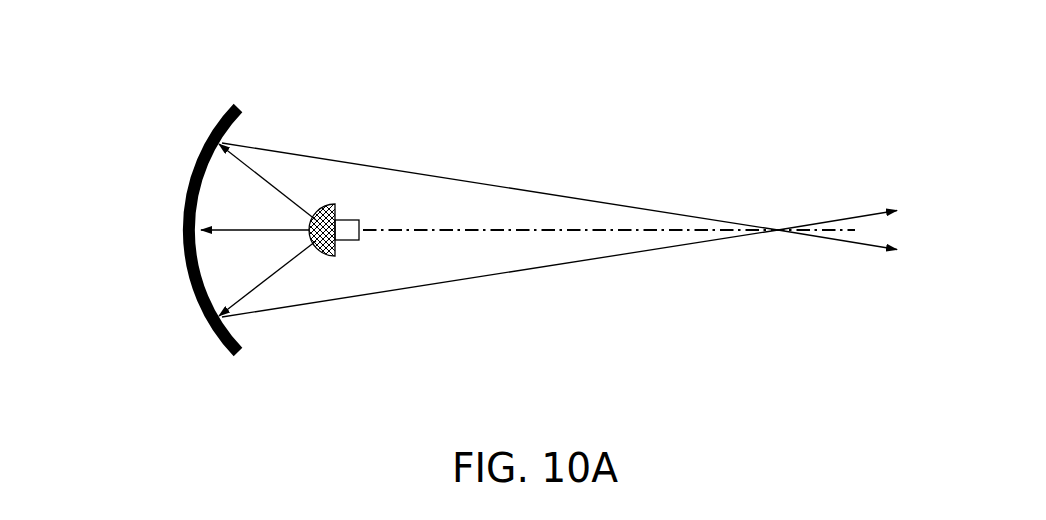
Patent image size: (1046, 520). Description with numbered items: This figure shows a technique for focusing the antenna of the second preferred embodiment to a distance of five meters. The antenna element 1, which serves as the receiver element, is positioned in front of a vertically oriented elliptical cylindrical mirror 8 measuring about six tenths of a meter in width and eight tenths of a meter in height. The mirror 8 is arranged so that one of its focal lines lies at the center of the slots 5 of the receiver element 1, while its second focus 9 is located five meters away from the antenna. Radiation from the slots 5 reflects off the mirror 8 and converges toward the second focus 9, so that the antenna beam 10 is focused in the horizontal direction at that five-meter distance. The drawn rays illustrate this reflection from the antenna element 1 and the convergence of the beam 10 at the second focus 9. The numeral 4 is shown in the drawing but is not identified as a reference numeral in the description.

The antenna element 1 is at (337, 270).
The lens 4 is at (315, 205).
The slots 5 is at (337, 210).
The elliptical cylindrical mirror 8 is at (176, 242).
The second focus 9 is at (780, 228).
The antenna beam 10 is at (502, 192).